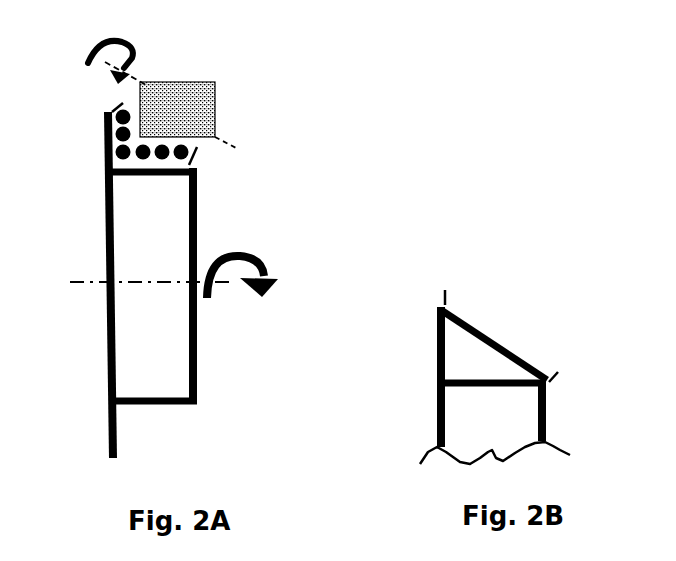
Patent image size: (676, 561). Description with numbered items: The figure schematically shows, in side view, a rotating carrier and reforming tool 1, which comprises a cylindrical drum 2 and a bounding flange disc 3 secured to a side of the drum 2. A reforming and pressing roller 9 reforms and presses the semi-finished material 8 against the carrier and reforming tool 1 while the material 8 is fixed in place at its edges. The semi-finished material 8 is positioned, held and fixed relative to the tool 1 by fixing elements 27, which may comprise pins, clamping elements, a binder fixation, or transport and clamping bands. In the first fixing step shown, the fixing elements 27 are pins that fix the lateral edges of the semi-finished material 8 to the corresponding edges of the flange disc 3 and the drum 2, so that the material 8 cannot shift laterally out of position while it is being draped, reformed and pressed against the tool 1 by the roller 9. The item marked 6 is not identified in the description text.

In FIG. 2A, the carrier and reforming tool 1 is at (204, 220).
In FIG. 2A, the cylindrical drum 2 is at (196, 190).
In FIG. 2B, the cylindrical drum 2 is at (548, 412).
In FIG. 2B, the flange disc 3 is at (438, 360).
In FIG. 2A, the fastening holes 6 is at (104, 158).
In FIG. 2B, the semi-finished material 8 is at (493, 338).
In FIG. 2A, the reforming and pressing roller 9 is at (217, 93).
In FIG. 2A, the fixing elements 27 is at (193, 157).
In FIG. 2B, the fixing elements 27 is at (448, 295).